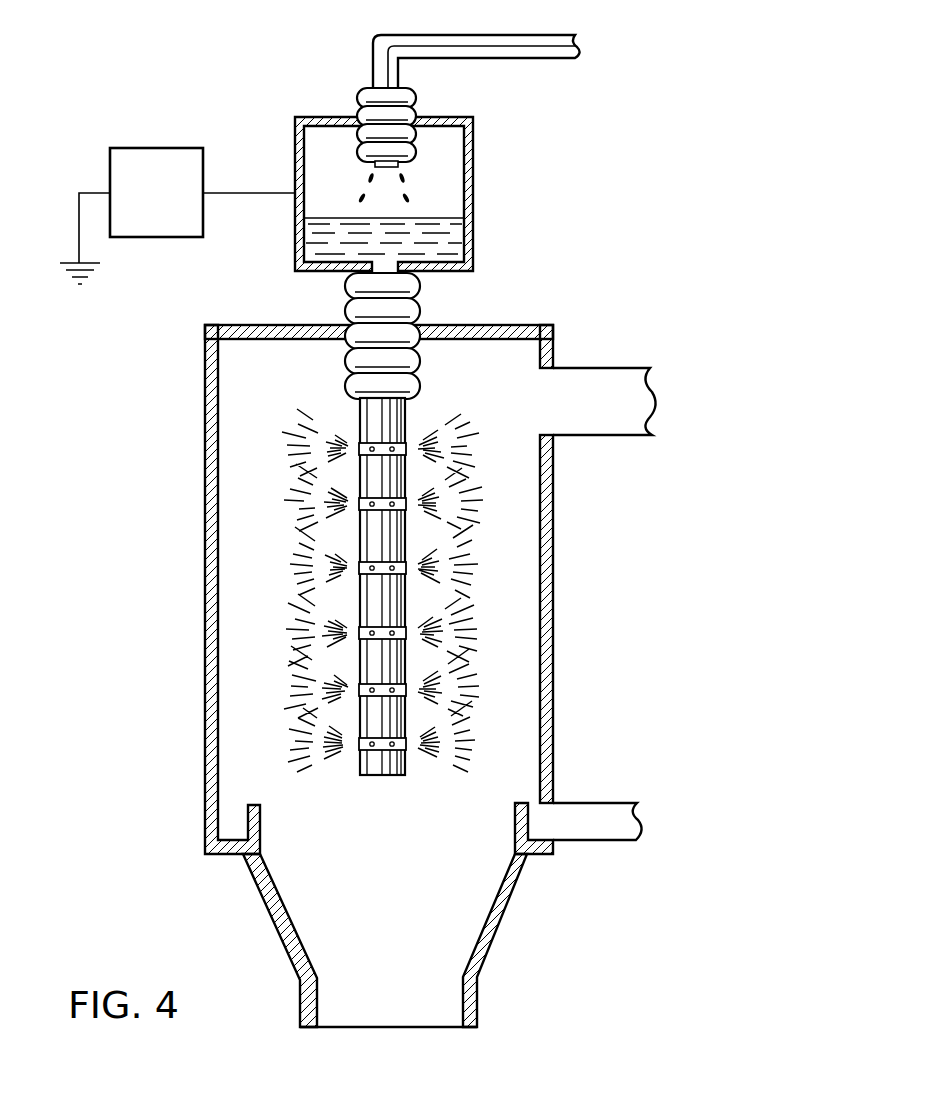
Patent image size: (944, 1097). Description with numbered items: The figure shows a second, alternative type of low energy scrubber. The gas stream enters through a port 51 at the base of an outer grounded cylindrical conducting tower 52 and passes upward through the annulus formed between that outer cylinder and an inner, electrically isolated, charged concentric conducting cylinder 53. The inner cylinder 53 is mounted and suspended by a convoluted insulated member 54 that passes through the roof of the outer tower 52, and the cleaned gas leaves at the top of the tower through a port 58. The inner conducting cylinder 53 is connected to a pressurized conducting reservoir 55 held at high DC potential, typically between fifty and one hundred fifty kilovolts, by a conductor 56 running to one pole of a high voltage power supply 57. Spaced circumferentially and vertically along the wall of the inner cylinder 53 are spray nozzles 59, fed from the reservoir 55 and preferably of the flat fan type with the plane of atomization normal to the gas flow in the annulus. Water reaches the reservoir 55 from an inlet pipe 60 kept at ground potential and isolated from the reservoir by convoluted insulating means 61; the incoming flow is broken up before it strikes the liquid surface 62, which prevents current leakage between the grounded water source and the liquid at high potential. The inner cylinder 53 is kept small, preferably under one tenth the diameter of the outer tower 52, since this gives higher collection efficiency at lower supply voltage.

The port 51 is at (447, 1036).
The outer grounded cylindrical conducting tower 52 is at (554, 662).
The inner charged concentric conducting cylinder 53 is at (370, 546).
The convoluted insulated member 54 is at (414, 318).
The pressurized conducting reservoir 55 is at (475, 238).
The conductor 56 is at (238, 193).
The high voltage power supply 57 is at (117, 167).
The port 58 is at (641, 404).
The spray nozzles 59 is at (433, 553).
The inlet pipe 60 is at (465, 45).
The convoluted insulating means 61 is at (417, 92).
The liquid surface 62 is at (426, 217).